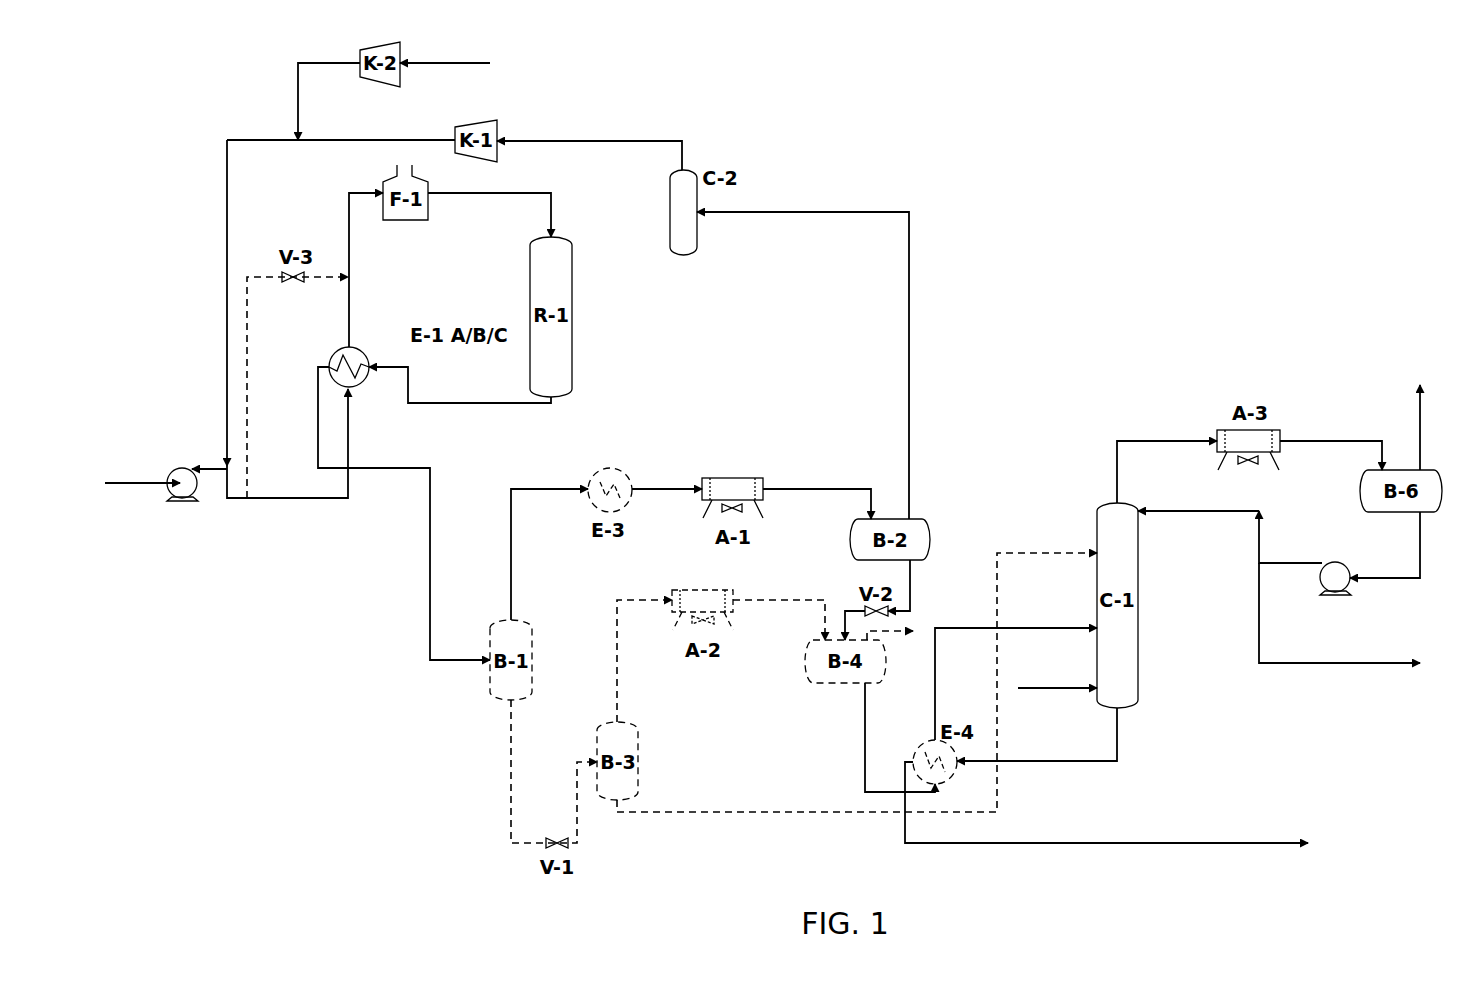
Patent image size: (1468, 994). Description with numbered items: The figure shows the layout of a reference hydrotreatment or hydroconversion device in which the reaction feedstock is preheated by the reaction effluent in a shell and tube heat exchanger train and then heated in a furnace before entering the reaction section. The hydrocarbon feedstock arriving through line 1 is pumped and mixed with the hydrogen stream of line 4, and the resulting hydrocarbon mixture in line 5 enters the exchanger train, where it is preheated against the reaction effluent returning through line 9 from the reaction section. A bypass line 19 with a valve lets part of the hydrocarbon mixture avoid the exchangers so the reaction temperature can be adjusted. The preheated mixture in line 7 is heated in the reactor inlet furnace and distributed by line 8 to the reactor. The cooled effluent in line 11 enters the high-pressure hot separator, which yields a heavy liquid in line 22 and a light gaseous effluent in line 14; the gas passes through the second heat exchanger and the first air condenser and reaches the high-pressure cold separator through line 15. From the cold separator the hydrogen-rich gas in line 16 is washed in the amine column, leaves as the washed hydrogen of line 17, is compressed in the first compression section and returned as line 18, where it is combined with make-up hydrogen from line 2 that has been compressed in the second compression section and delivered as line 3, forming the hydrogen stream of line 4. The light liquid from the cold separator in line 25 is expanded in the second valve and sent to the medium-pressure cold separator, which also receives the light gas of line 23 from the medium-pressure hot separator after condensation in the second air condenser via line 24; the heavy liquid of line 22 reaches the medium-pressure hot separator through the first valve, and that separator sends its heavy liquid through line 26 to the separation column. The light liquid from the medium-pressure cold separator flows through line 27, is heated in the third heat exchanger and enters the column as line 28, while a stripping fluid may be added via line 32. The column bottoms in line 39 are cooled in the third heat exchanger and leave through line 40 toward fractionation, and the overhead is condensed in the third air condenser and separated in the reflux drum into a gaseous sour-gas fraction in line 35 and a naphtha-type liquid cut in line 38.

The hydrocarbon feedstock line 1 is at (142, 474).
The make-up hydrogen line 2 is at (445, 53).
The compressed make-up hydrogen line 3 is at (329, 101).
The hydrogen stream line 4 is at (237, 303).
The hydrocarbon mixture line 5 is at (287, 452).
The preheated hydrocarbon mixture line 7 is at (366, 257).
The heated hydrocarbon mixture line 8 is at (496, 215).
The reaction effluent line 9 is at (460, 385).
The cooled reaction effluent line 11 is at (404, 513).
The first gaseous effluent line 14 is at (549, 544).
The condensed effluent line 15 is at (817, 494).
The first gaseous effluent comprising hydrogen line 16 is at (803, 365).
The recycled and amine-washed hydrogen line 17 is at (589, 145).
The recycled, washed and compressed hydrogen line 18 is at (341, 126).
The bypass line 19 is at (297, 387).
The first liquid effluent comprising heavy fraction line 22 is at (539, 771).
The second gaseous effluent comprising light fraction line 23 is at (644, 651).
The condensed second gaseous effluent line 24 is at (779, 610).
The first liquid effluent comprising light fraction line 25 is at (911, 585).
The second liquid effluent comprising heavy fraction line 26 is at (857, 694).
The second liquid effluent comprising light fraction line 27 is at (900, 737).
The heated second liquid effluent line 28 is at (1016, 673).
The stripping fluid line 32 is at (1057, 679).
The gaseous overhead fraction line 35 is at (1434, 427).
The hydrocarbon liquid cut line 38 is at (1339, 613).
The bottoms liquid line 39 is at (1037, 744).
The cooled bottoms liquid line 40 is at (1106, 802).